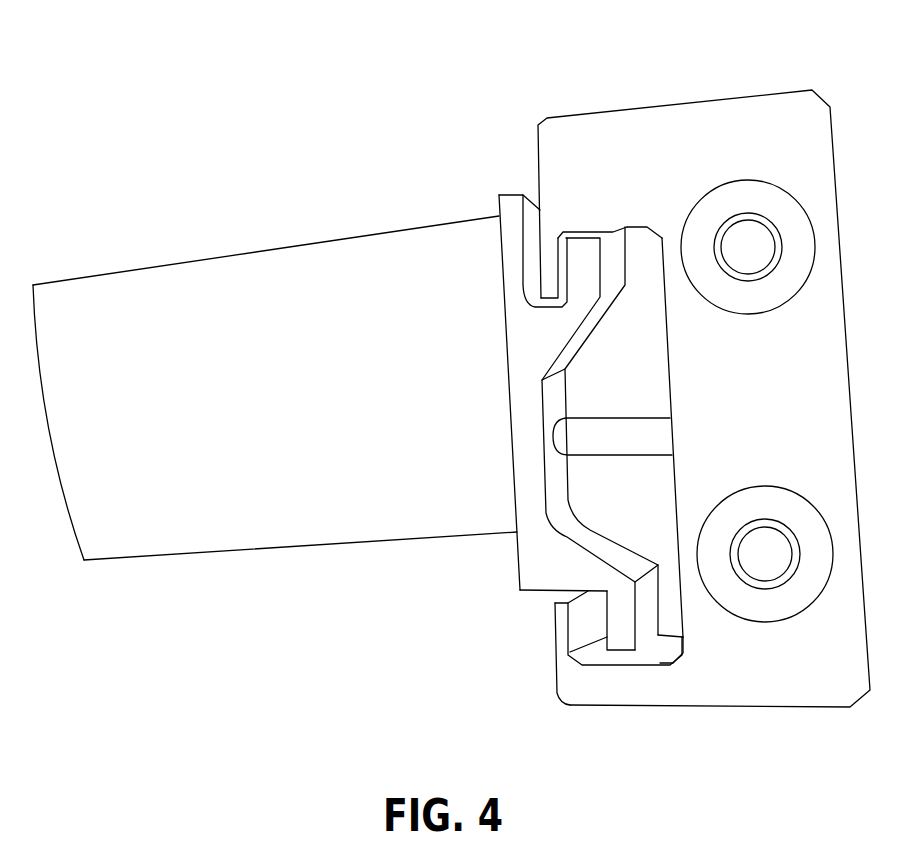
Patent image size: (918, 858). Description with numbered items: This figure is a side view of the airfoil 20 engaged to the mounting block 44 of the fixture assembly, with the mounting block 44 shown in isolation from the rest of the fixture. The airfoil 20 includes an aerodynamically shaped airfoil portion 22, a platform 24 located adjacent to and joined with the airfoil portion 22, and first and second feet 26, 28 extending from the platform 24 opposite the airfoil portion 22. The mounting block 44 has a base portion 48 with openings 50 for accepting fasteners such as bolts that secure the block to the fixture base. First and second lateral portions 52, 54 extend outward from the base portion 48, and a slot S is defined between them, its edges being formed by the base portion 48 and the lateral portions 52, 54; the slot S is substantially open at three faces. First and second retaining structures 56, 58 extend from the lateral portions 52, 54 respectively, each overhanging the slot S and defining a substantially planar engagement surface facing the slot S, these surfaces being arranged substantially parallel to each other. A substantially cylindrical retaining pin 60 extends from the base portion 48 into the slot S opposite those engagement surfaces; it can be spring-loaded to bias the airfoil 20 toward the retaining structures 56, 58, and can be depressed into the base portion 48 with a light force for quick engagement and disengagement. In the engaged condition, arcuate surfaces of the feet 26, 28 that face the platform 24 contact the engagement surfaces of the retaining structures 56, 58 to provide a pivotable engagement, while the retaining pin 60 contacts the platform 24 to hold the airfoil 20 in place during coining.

The airfoil 20 is at (245, 538).
The airfoil portion 22 is at (357, 266).
The platform 24 is at (533, 537).
The first foot 26 is at (583, 265).
The second foot 28 is at (627, 638).
The mounting block 44 is at (765, 107).
The base portion 48 is at (775, 448).
The openings 50 is at (710, 217).
The first lateral portion 52 is at (637, 130).
The second lateral portion 54 is at (653, 680).
The first retaining structure 56 is at (545, 255).
The second retaining structure 58 is at (563, 633).
The retaining pin 60 is at (573, 435).
The slot S is at (640, 353).